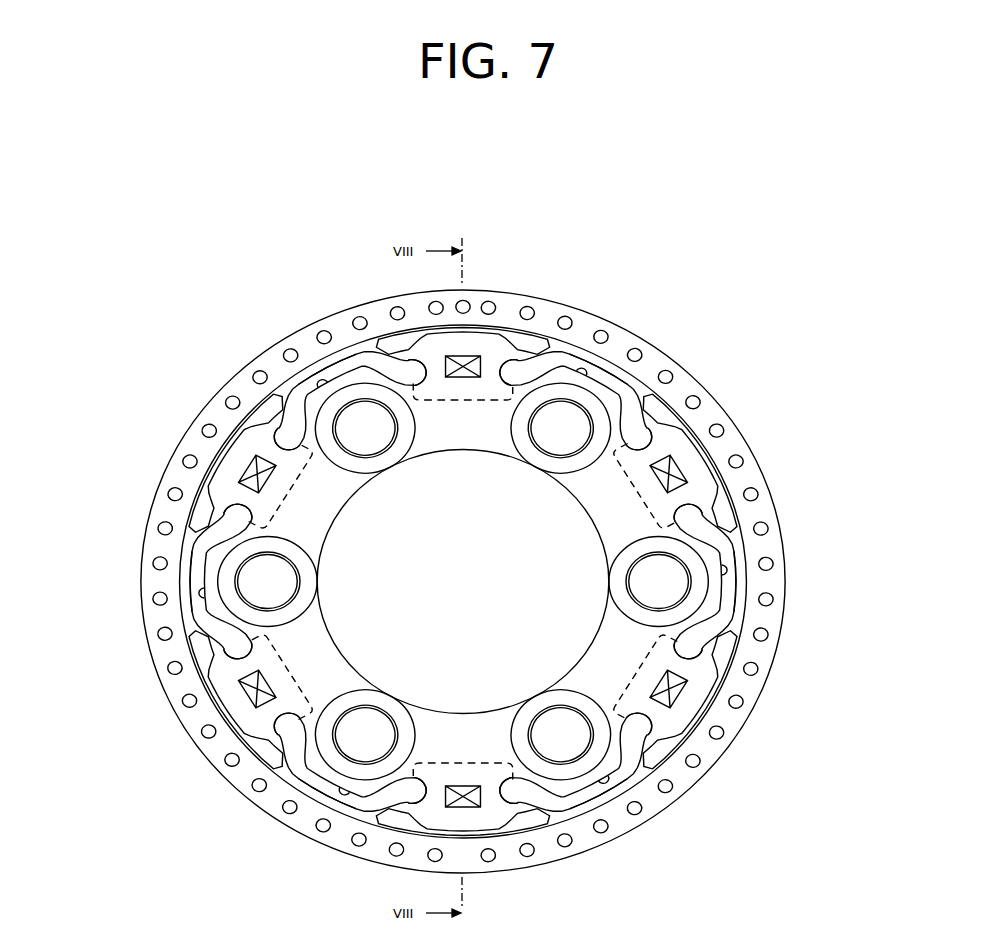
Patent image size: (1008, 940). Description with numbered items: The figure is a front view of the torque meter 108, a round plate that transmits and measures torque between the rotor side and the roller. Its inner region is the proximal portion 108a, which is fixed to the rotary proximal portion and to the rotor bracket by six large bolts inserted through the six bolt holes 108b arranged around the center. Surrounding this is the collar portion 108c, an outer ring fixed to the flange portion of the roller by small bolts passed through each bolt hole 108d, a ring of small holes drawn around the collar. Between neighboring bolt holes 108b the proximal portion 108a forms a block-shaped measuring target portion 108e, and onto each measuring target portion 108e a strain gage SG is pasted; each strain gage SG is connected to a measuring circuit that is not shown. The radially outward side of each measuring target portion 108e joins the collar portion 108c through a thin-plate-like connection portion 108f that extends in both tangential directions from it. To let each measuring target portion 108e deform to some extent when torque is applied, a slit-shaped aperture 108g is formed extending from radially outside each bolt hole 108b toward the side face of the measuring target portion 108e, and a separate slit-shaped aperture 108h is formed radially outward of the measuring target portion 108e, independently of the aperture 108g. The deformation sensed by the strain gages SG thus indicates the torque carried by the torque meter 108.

The torque meter 108 is at (636, 306).
The proximal portion 108a is at (440, 452).
The bolt holes 108b is at (368, 452).
The collar portion 108c is at (266, 378).
The bolt hole 108d is at (733, 462).
The measuring target portion 108e is at (503, 347).
The connection portion 108f is at (410, 342).
The slit-shaped aperture 108g is at (350, 368).
The slit-shaped aperture 108h is at (536, 343).
The strain gage SG is at (482, 360).